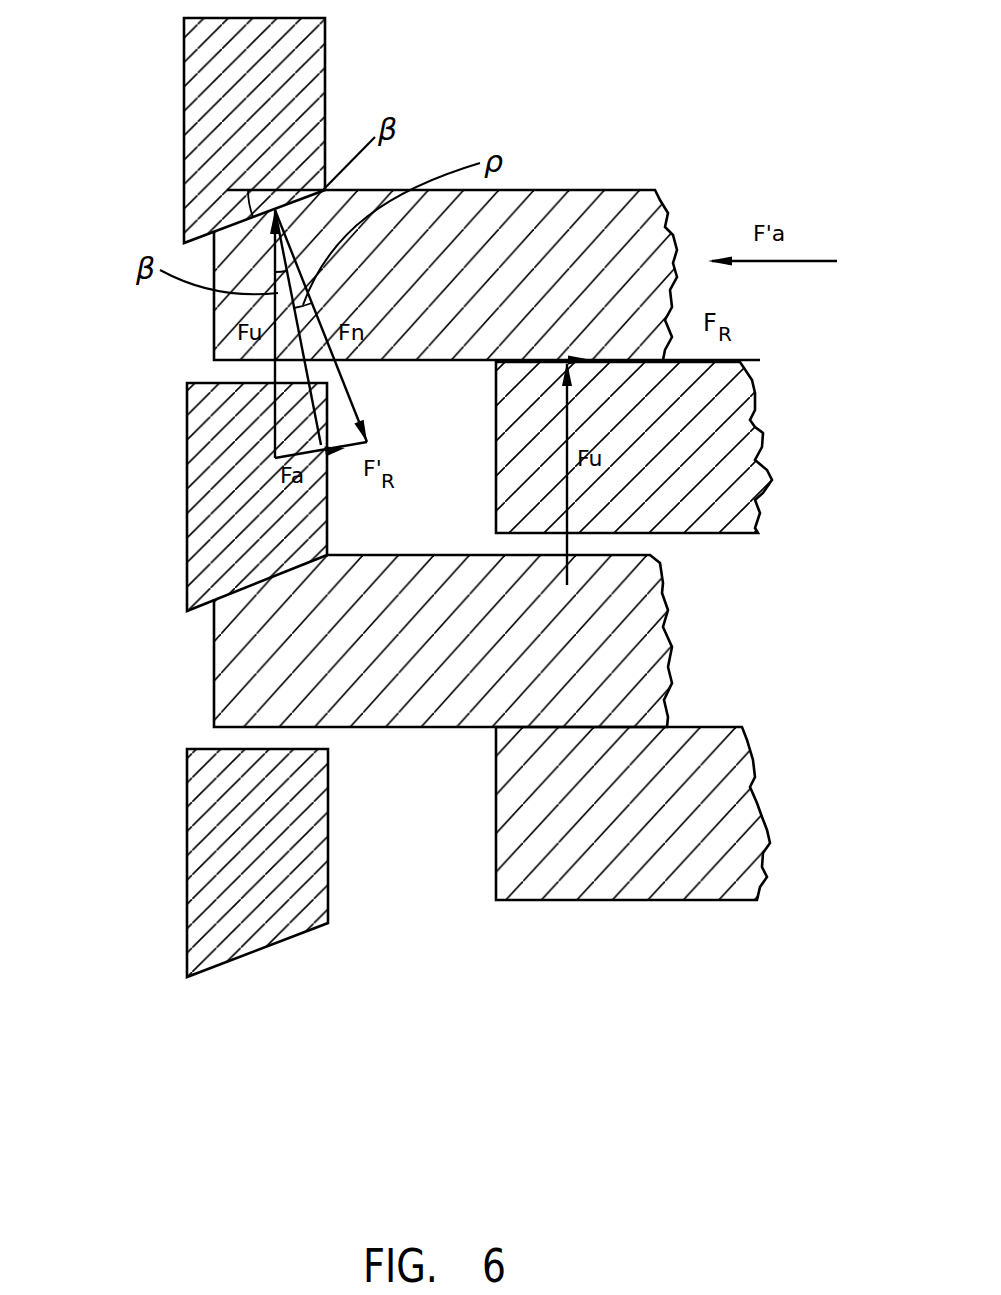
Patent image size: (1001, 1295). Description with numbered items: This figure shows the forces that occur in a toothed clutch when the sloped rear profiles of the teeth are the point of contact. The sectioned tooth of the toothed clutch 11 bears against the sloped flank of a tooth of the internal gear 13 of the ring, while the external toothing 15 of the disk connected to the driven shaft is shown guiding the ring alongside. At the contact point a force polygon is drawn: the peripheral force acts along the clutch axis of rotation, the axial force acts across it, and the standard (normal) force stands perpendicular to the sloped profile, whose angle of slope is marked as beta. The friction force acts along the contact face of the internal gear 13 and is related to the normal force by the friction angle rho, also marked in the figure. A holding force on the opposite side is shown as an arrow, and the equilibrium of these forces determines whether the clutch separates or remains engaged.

The toothed clutch 11 is at (202, 550).
The internal gear 13 is at (655, 632).
The external toothing 15 is at (742, 468).